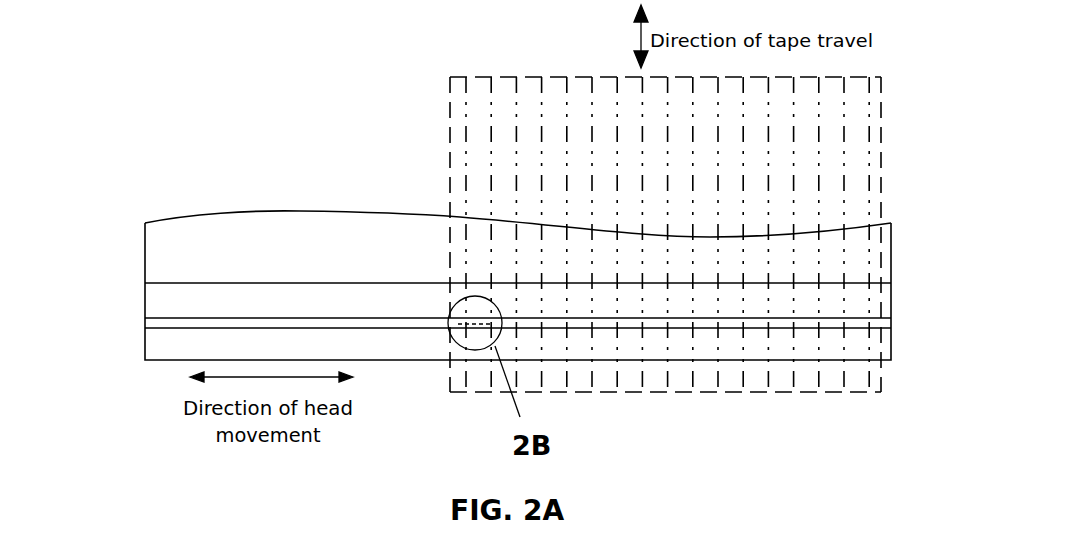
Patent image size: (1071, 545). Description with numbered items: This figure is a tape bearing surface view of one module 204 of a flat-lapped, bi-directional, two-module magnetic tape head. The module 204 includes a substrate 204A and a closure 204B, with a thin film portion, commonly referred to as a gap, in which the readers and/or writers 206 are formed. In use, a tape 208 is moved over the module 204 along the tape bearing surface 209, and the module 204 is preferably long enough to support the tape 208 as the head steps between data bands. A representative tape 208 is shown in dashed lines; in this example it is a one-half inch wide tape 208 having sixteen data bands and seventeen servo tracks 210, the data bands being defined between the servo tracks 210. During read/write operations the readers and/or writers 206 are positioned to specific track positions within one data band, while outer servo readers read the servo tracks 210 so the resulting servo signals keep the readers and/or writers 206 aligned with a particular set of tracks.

The module 204 is at (469, 286).
The substrate 204A is at (289, 212).
The closure 204B is at (145, 345).
The readers and/or writers 206 is at (440, 322).
The tape 208 is at (450, 80).
The tape bearing surface 209 is at (348, 305).
The servo tracks 210 is at (565, 168).